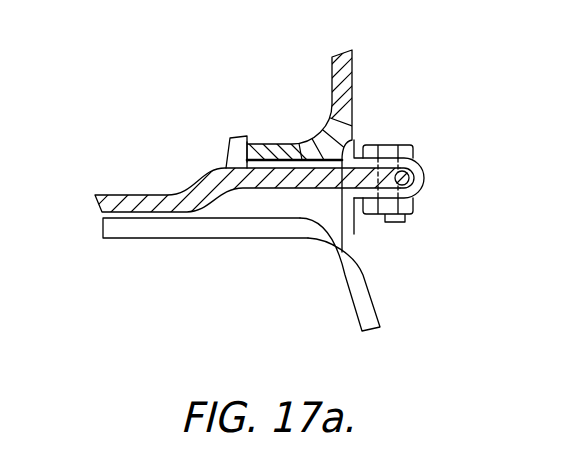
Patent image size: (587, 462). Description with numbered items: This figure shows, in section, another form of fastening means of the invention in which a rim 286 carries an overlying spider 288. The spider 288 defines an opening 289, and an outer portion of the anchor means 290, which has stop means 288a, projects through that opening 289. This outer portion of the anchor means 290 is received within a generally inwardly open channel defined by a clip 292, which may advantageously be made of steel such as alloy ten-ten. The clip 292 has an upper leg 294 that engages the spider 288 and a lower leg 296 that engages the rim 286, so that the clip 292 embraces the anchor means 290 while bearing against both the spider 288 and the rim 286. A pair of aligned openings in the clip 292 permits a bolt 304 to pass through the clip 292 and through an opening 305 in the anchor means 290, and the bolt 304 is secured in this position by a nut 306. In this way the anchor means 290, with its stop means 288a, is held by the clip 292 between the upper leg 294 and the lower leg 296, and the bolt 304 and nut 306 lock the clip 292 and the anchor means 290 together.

The rim 286 is at (292, 233).
The spider 288 is at (273, 143).
The stop means 288a is at (243, 138).
The opening 289 is at (245, 205).
The anchor means 290 is at (137, 196).
The clip 292 is at (430, 189).
The upper leg 294 is at (353, 140).
The lower leg 296 is at (408, 298).
The bolt 304 is at (408, 146).
The opening 305 is at (409, 173).
The nut 306 is at (409, 214).